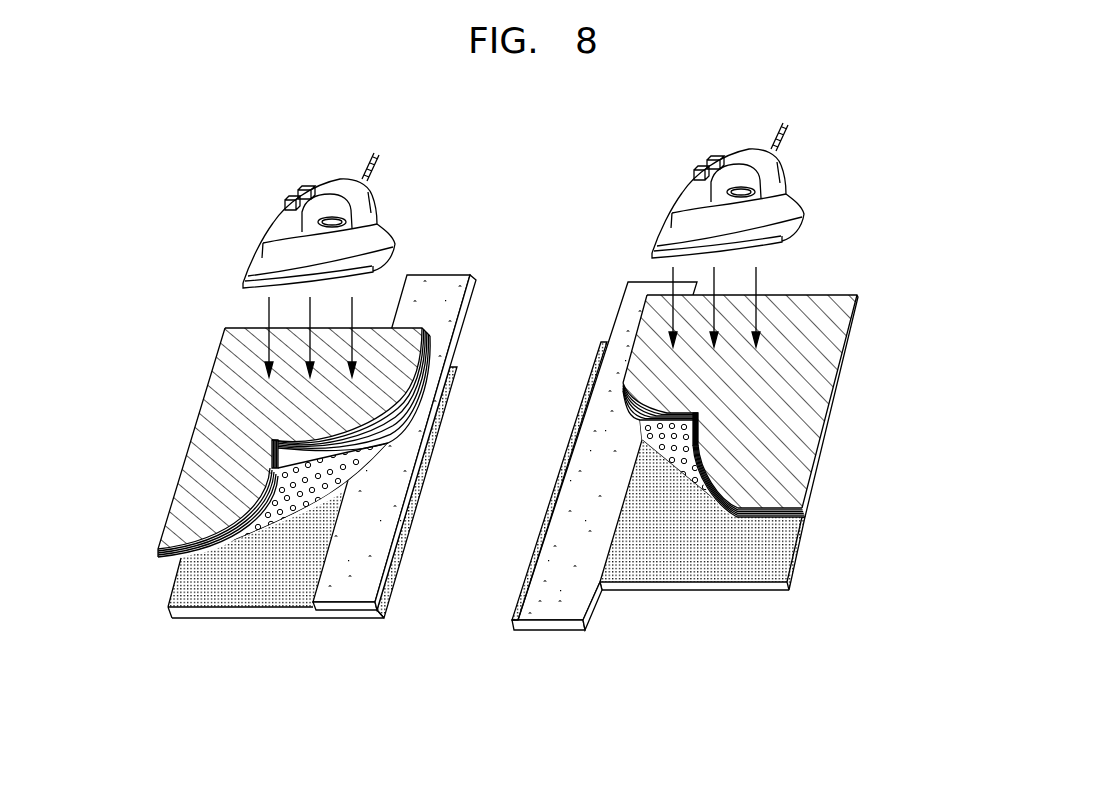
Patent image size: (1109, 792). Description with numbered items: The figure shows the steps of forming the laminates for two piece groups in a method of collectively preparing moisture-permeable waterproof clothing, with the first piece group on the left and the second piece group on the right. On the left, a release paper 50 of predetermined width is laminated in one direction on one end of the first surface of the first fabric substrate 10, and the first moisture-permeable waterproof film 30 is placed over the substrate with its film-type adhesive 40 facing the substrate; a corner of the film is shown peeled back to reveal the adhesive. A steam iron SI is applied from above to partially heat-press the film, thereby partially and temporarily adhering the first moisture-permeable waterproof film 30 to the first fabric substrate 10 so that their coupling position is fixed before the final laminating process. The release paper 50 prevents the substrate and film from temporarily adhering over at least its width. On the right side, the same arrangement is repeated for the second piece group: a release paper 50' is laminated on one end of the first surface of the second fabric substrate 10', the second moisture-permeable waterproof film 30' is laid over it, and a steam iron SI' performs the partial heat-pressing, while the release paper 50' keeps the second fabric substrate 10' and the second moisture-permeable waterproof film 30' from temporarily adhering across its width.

The first fabric substrate 10 is at (312, 523).
The first moisture-permeable waterproof film 30 is at (269, 485).
The film-type adhesive 40 is at (261, 488).
The release paper 50 is at (394, 477).
The steam iron SI is at (337, 197).
The second fabric substrate 10' is at (702, 542).
The second moisture-permeable waterproof film 30' is at (756, 406).
The release paper 50' is at (604, 489).
The steam iron SI' is at (746, 167).